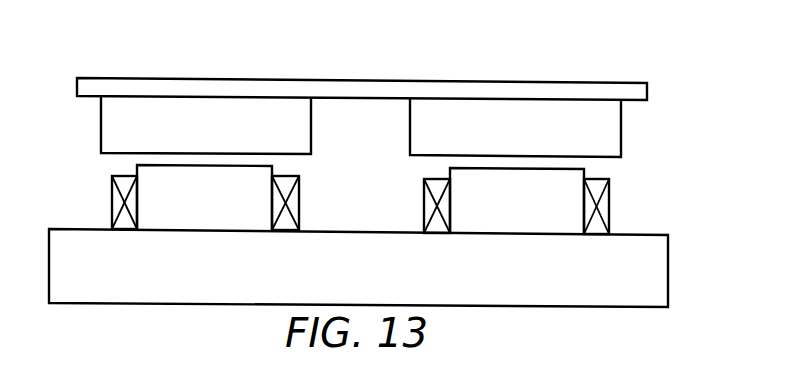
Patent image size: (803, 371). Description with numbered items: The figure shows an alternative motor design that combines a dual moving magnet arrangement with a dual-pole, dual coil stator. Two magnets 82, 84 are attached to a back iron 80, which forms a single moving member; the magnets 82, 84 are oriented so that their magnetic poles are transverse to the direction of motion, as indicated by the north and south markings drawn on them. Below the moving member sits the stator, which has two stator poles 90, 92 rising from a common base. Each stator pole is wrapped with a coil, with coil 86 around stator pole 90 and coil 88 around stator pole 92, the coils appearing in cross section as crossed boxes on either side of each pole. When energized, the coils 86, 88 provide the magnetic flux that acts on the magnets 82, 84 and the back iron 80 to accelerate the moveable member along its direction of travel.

The back iron 80 is at (362, 65).
The moving magnet 82 is at (110, 130).
The moving magnet 84 is at (602, 140).
The coil 86 is at (120, 203).
The coil 88 is at (605, 217).
The stator pole 90 is at (218, 215).
The stator pole 92 is at (528, 218).